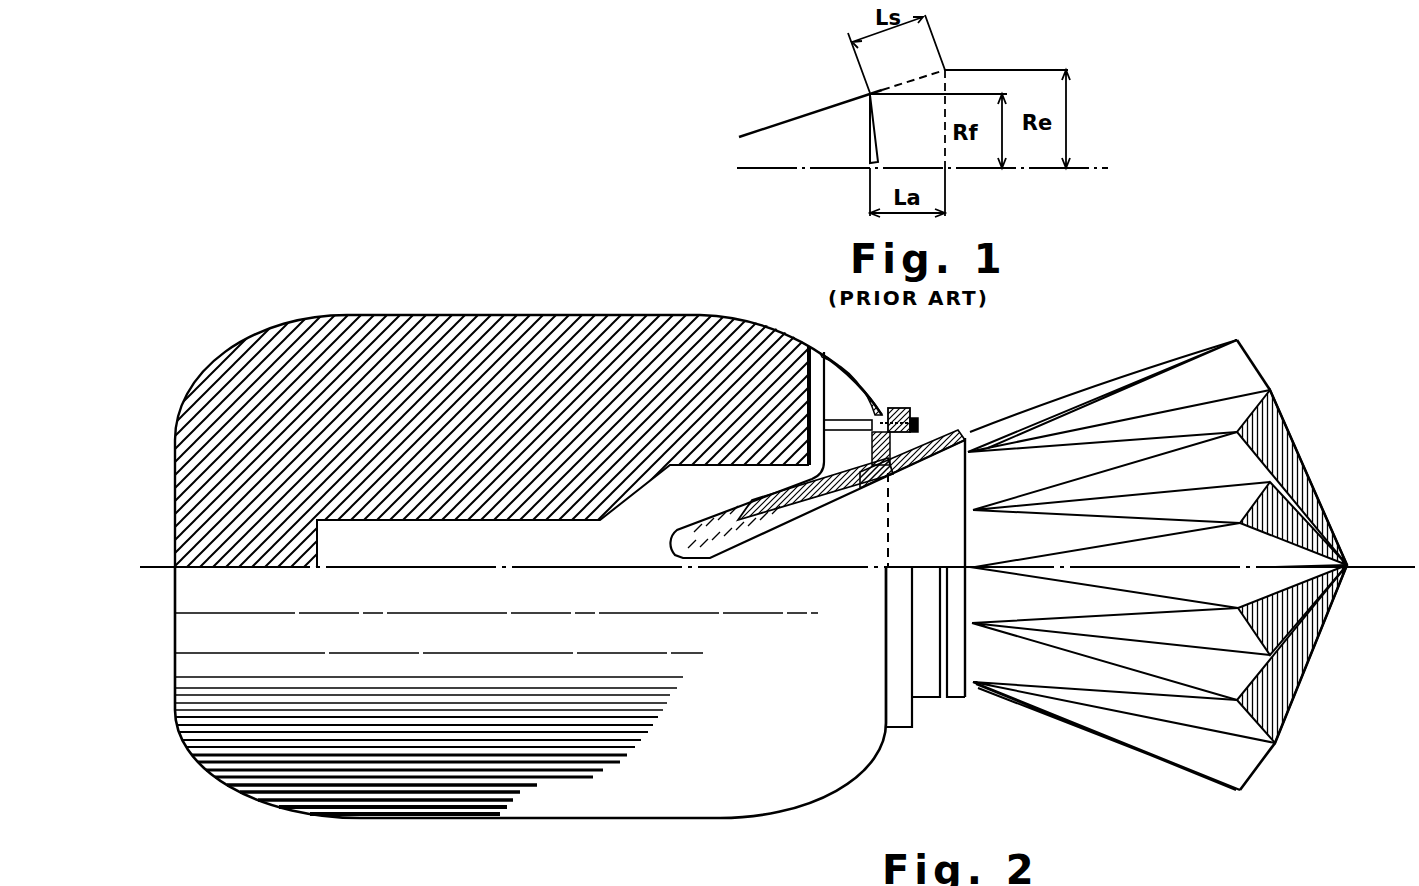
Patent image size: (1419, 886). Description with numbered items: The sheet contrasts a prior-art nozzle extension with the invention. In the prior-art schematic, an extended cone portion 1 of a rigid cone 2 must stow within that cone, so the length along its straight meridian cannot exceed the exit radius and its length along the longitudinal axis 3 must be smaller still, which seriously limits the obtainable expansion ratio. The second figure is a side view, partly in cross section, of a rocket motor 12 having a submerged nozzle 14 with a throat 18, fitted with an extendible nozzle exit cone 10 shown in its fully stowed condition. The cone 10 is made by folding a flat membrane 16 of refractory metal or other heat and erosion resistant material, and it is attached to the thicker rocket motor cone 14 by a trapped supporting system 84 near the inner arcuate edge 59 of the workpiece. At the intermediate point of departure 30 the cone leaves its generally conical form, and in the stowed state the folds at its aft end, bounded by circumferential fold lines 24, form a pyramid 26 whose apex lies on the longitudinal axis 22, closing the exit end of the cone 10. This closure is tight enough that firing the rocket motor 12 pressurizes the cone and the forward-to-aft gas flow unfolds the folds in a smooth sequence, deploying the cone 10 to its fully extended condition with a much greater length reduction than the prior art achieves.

In FIG. 1, the extended cone portion 1 is at (885, 90).
In FIG. 1, the rigid cone 2 is at (800, 116).
In FIG. 1, the longitudinal axis 3 is at (803, 166).
In FIG. 2, the extendible nozzle exit cone 10 is at (1308, 351).
In FIG. 2, the rocket motor 12 is at (458, 315).
In FIG. 2, the submerged nozzle 14 is at (847, 483).
In FIG. 2, the membrane 16 is at (1082, 391).
In FIG. 2, the throat 18 is at (672, 557).
In FIG. 2, the longitudinal axis 22 is at (1377, 566).
In FIG. 2, the circumferential fold line 24 is at (1259, 367).
In FIG. 2, the pyramid 26 is at (1303, 463).
In FIG. 2, the point of departure 30 is at (1238, 340).
In FIG. 2, the inner arcuate edge 59 is at (888, 545).
In FIG. 2, the trapped supporting system 84 is at (937, 407).